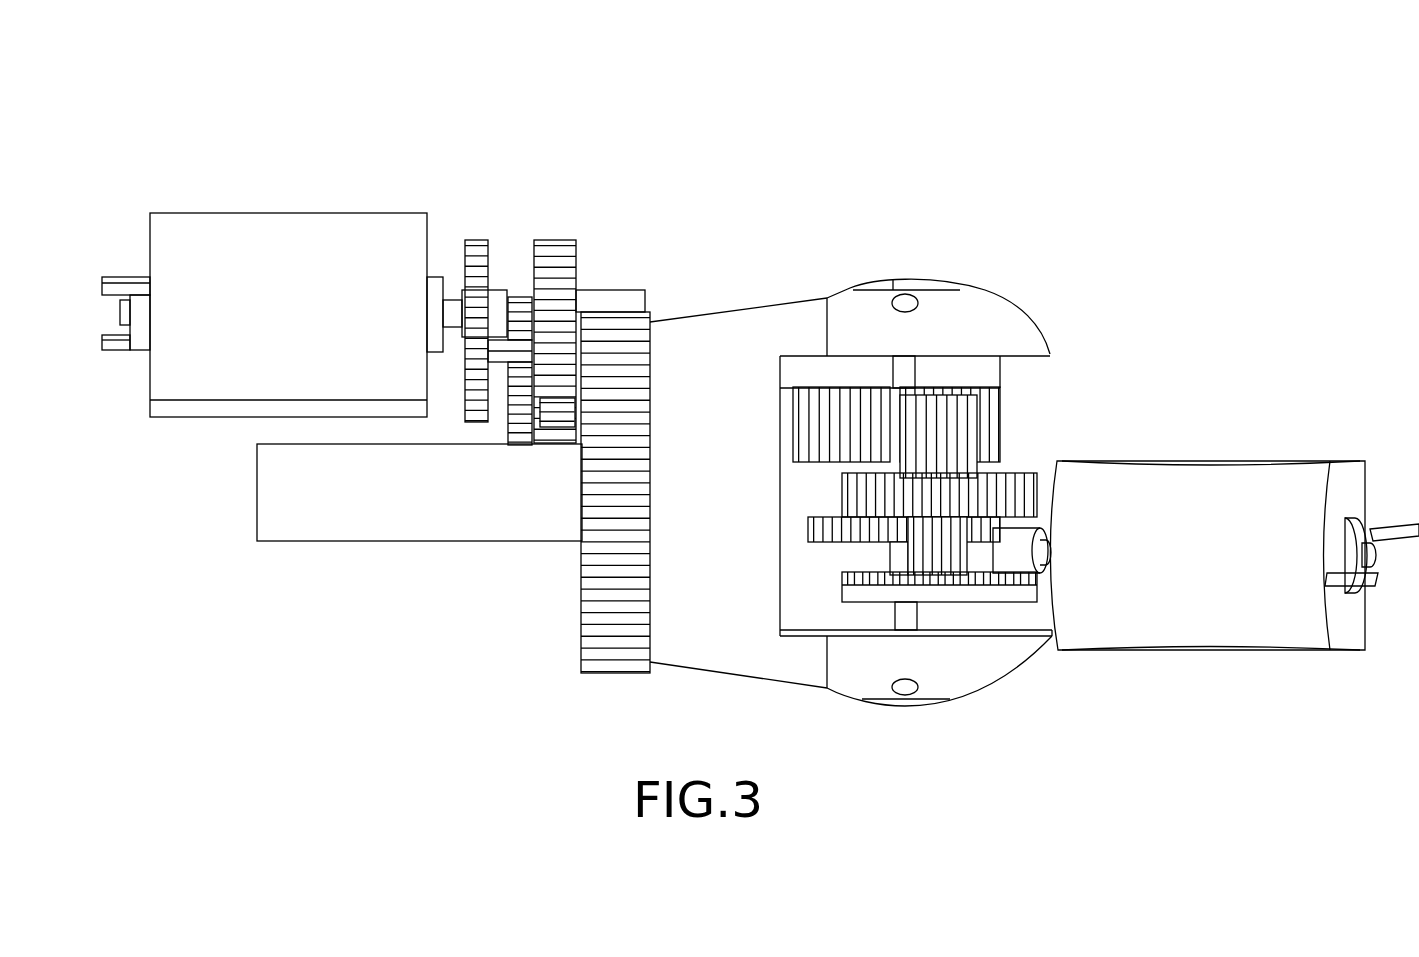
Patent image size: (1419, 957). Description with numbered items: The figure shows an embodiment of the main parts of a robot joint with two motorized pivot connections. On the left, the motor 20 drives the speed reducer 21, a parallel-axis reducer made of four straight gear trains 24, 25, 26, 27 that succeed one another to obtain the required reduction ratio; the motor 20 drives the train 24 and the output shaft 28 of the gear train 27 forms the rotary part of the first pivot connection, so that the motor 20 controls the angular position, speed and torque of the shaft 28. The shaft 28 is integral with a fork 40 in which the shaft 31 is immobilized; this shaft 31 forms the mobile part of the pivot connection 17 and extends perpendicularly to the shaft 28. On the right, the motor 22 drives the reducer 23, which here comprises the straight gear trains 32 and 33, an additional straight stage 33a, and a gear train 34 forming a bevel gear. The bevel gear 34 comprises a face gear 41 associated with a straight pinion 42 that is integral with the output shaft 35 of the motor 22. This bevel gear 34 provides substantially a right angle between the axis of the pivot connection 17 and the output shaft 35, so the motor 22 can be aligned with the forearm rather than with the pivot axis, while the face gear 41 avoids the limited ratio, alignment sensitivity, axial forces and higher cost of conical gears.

The pivot connection 17 is at (910, 514).
The motor 20 is at (269, 313).
The speed reducer 21 is at (562, 355).
The motor 22 is at (1158, 568).
The reducer 23 is at (913, 586).
The gear train 24 is at (476, 240).
The gear train 25 is at (515, 297).
The gear train 26 is at (561, 240).
The gear train 27 is at (613, 397).
The output shaft 28 is at (416, 503).
The shaft 31 is at (903, 370).
The gear train 32 is at (790, 440).
The gear train 33 is at (833, 495).
The additional stage 33a is at (808, 533).
The bevel gear 34 is at (944, 673).
The output shaft 35 is at (1046, 560).
The fork 40 is at (727, 330).
The face gear 41 is at (973, 597).
The pinion 42 is at (1017, 552).